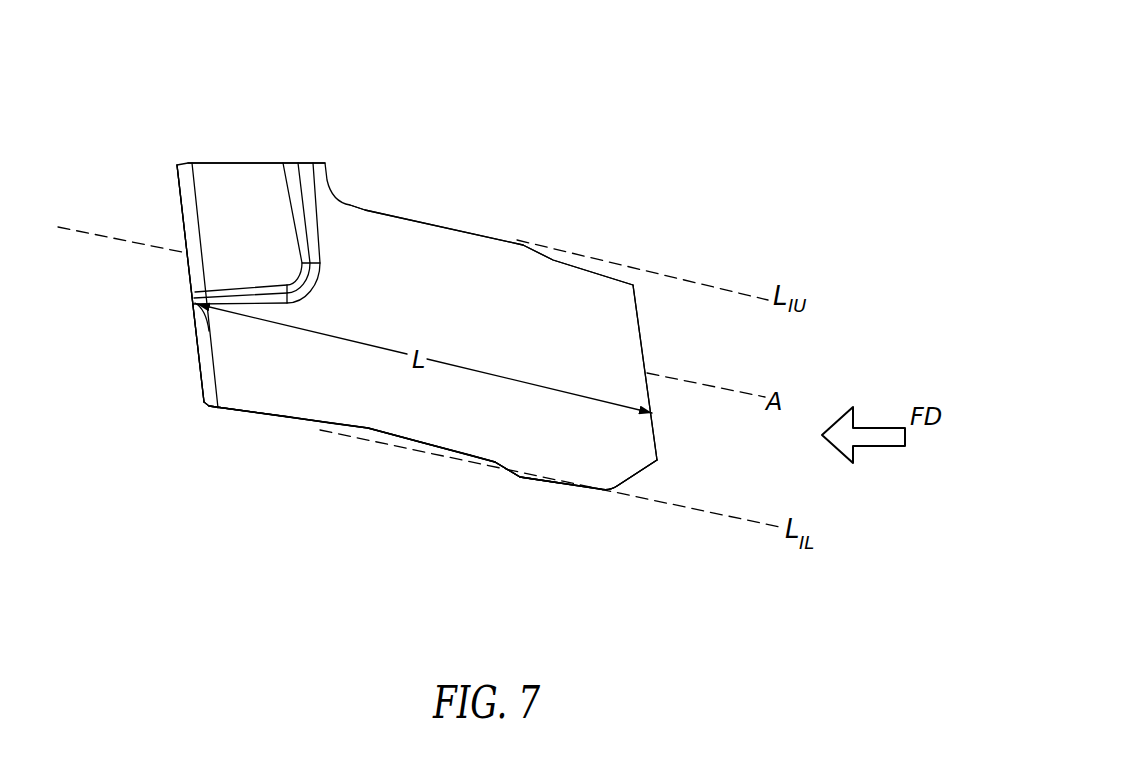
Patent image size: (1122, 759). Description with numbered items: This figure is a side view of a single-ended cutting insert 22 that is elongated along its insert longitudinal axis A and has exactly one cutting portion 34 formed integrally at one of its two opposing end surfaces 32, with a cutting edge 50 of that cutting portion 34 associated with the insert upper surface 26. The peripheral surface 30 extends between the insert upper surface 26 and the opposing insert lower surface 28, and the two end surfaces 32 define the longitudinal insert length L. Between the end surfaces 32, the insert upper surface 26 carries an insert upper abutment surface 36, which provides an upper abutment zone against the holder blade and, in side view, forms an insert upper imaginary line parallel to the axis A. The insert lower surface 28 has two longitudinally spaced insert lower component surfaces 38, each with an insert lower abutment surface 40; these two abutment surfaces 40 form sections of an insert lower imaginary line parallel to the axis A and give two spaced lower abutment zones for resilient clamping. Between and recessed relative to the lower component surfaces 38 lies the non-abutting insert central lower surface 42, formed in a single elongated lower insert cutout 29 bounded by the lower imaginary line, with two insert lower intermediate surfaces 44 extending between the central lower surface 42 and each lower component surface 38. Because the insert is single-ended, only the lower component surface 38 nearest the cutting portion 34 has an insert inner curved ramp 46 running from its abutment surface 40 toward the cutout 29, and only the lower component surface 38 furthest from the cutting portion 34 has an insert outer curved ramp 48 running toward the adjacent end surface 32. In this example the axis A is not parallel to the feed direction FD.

The cutting insert 22 is at (637, 222).
The insert upper surface 26 is at (500, 202).
The insert lower surface 28 is at (612, 570).
The lower insert cutout 29 is at (447, 452).
The peripheral surface 30 is at (375, 255).
The end surfaces 32 is at (200, 362).
The cutting portion 34 is at (213, 128).
The insert upper abutment surface 36 is at (423, 218).
The insert lower component surfaces 38 is at (252, 452).
The insert lower abutment surfaces 40 is at (238, 413).
The insert central lower surface 42 is at (400, 440).
The insert lower intermediate surfaces 44 is at (340, 430).
The insert inner curved ramp 46 is at (310, 433).
The insert outer curved ramp 48 is at (607, 492).
The cutting edge 50 is at (177, 163).